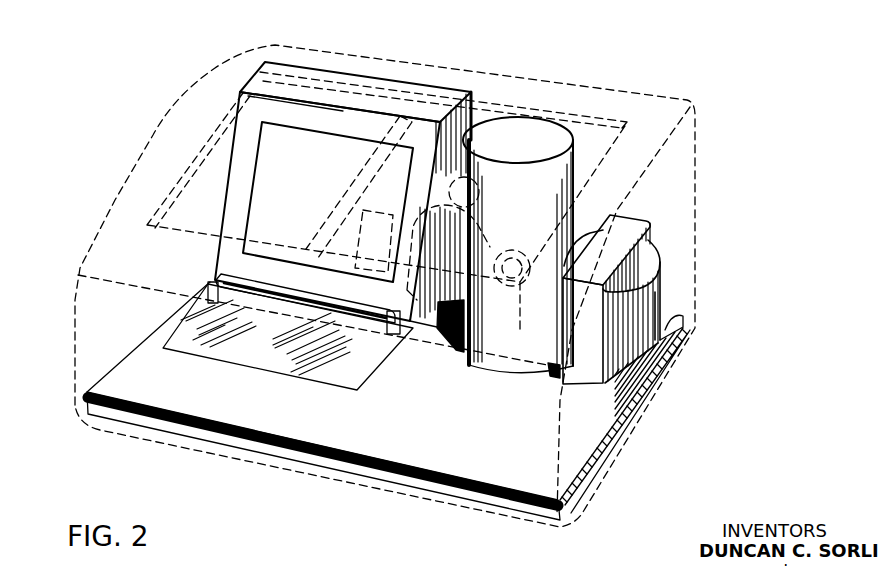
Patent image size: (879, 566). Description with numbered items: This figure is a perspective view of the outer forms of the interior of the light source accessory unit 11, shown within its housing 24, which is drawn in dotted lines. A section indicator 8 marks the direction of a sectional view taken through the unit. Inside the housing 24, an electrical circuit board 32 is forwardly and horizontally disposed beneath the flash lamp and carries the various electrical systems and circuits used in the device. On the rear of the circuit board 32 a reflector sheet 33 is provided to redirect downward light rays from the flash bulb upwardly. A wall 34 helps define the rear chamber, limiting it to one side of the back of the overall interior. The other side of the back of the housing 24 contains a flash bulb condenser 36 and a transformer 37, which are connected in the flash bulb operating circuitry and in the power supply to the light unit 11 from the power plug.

The section line indicator for FIG. 8 is at (441, 62).
The light source accessory unit 11 is at (607, 84).
The housing 24 is at (697, 147).
The electrical circuit board 32 is at (580, 438).
The reflector sheet 33 is at (180, 340).
The wall 34 is at (473, 110).
The flash bulb condenser 36 is at (533, 133).
The transformer 37 is at (667, 282).